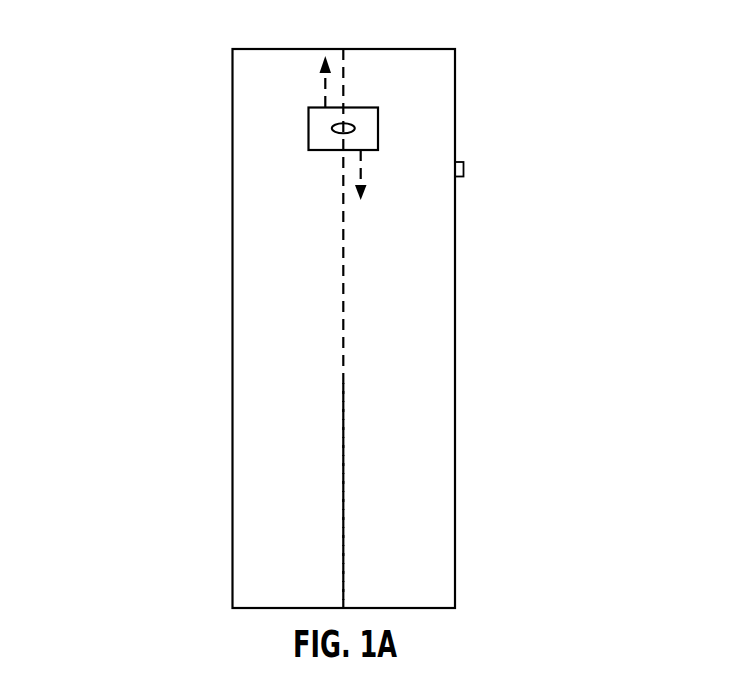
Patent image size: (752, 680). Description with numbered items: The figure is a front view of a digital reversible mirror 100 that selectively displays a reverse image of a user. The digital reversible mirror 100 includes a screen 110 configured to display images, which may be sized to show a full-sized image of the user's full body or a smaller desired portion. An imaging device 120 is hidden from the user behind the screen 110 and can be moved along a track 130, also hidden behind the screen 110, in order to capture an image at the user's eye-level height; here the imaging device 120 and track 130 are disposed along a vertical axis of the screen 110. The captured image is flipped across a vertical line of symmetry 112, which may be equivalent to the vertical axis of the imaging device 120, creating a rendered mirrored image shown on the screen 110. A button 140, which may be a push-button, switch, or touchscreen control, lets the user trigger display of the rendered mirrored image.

The digital reversible mirror 100 is at (123, 38).
The screen 110 is at (455, 383).
The vertical line of symmetry 112 is at (343, 267).
The imaging device 120 is at (307, 128).
The track 130 is at (343, 383).
The button 140 is at (464, 168).